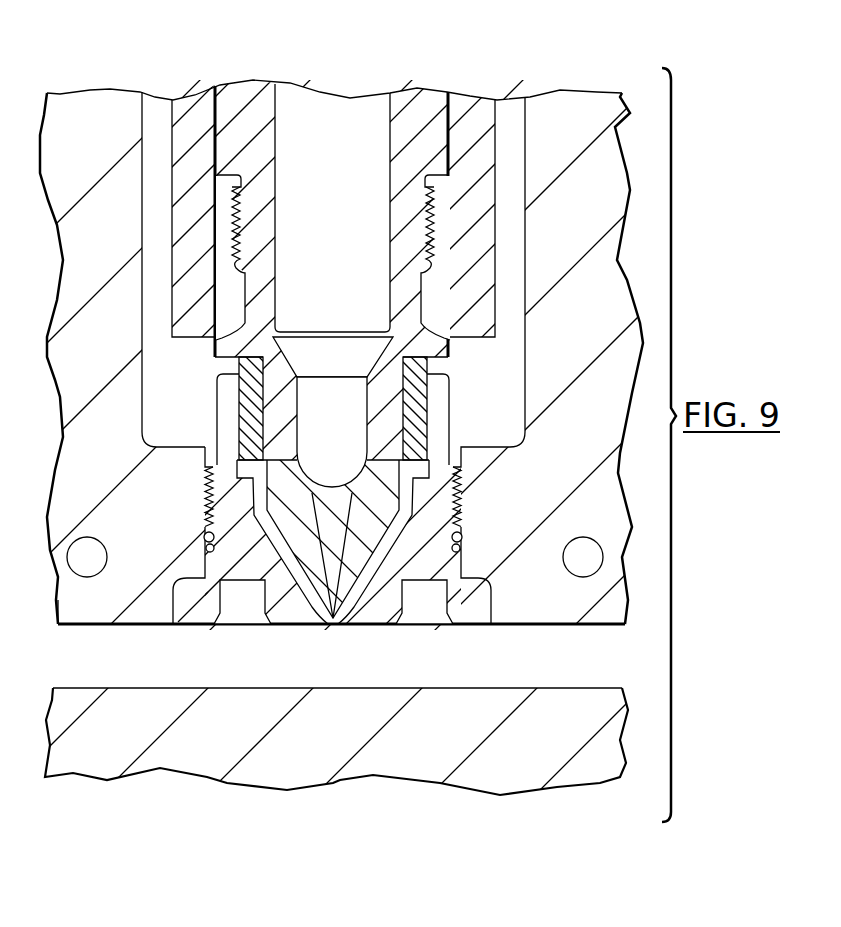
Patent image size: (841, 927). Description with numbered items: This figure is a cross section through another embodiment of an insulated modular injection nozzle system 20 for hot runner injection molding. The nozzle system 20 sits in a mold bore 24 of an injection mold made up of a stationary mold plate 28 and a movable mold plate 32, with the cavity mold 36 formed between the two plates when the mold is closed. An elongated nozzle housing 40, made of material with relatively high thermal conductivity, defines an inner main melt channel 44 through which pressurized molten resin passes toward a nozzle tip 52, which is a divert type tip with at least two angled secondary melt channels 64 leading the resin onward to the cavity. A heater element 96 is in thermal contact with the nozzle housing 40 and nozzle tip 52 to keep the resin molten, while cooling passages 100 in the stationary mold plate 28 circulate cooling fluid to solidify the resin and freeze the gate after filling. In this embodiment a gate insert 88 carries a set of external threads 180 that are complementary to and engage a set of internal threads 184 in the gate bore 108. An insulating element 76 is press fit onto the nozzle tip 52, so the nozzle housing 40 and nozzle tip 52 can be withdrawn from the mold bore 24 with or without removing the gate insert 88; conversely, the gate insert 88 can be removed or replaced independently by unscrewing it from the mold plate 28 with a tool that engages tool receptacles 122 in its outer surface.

The insulated modular injection nozzle system 20 is at (237, 0).
The mold bore 24 is at (148, 296).
The stationary mold plate 28 is at (135, 232).
The movable mold plate 32 is at (366, 700).
The cavity mold 36 is at (548, 664).
The nozzle housing 40 is at (430, 108).
The main melt channel 44 is at (352, 260).
The nozzle tip 52 is at (441, 257).
The secondary melt channels 64 is at (350, 492).
The insulating element 76 is at (515, 358).
The gate insert 88 is at (433, 493).
The heater element 96 is at (487, 322).
The cooling passages 100 is at (584, 548).
The gate bore 108 is at (547, 506).
The tool receptacles 122 is at (240, 606).
The external threads 180 is at (206, 518).
The internal threads 184 is at (204, 488).